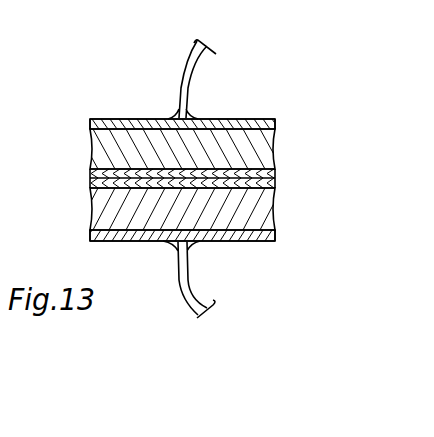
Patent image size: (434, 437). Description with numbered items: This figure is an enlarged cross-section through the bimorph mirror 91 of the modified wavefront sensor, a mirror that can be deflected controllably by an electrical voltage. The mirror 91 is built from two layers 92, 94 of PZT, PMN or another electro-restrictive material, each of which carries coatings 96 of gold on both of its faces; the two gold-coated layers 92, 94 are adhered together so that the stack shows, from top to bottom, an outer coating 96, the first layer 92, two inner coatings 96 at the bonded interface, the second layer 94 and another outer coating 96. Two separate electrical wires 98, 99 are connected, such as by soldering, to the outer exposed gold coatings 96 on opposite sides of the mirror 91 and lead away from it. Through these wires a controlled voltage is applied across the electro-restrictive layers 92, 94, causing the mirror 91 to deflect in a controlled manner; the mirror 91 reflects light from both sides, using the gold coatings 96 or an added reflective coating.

The mirror 91 is at (132, 82).
The layer 92 is at (264, 143).
The layer 94 is at (264, 217).
The coating 96 is at (233, 118).
The electrical wire 98 is at (186, 64).
The electrical wire 99 is at (182, 285).